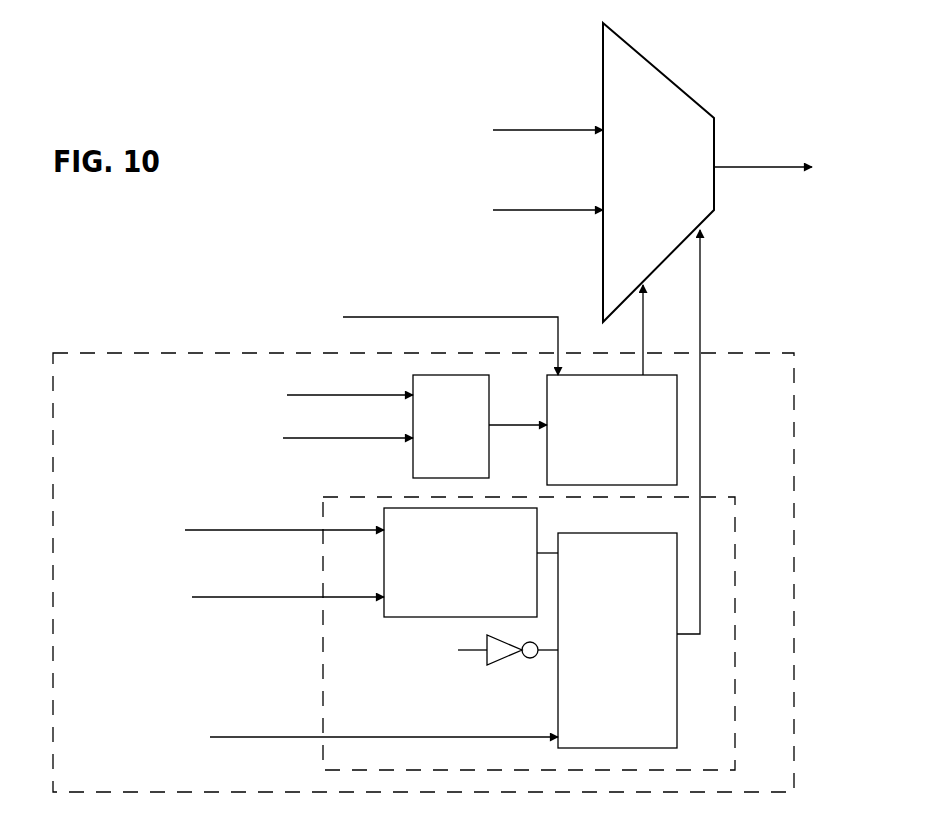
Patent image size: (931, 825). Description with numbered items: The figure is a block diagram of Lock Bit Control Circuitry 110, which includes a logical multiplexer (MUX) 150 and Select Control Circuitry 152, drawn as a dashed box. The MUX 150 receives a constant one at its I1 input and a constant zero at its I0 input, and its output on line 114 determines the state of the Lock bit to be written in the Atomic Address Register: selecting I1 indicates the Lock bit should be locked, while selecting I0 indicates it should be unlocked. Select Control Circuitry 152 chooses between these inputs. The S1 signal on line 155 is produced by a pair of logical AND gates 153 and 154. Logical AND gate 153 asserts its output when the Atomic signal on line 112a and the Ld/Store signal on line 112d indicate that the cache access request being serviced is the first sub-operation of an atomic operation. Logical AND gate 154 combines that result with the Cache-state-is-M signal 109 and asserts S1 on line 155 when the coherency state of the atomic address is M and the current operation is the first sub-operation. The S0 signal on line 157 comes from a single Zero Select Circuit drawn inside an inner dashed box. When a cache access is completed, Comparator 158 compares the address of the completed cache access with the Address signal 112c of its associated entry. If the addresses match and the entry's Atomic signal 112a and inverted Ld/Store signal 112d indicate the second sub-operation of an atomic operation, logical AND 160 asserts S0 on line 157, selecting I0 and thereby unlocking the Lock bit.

The Lock Bit Control Circuitry 110 is at (370, 92).
The logical multiplexer (MUX) 150 is at (667, 73).
The line 114 is at (765, 171).
The line 157 is at (700, 273).
The line 155 is at (640, 320).
The cache-state-is-M signal 109 is at (375, 317).
The Select Control Circuitry 152 is at (797, 556).
The line 112a is at (360, 392).
The line 112d is at (455, 683).
The address signal 112c is at (207, 598).
The logical AND gate 153 is at (463, 450).
The logical AND gate 154 is at (622, 459).
The Comparator 158 is at (480, 596).
The logical AND 160 is at (628, 667).